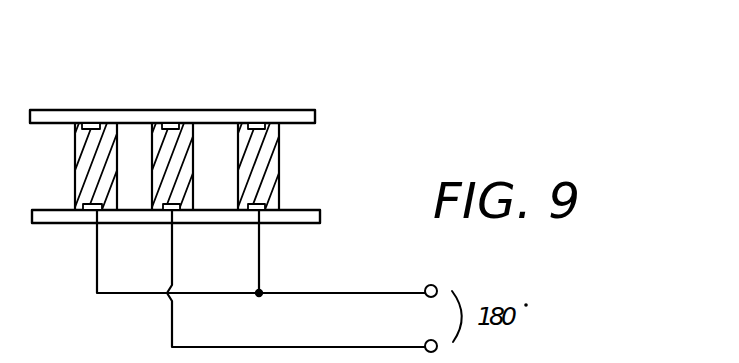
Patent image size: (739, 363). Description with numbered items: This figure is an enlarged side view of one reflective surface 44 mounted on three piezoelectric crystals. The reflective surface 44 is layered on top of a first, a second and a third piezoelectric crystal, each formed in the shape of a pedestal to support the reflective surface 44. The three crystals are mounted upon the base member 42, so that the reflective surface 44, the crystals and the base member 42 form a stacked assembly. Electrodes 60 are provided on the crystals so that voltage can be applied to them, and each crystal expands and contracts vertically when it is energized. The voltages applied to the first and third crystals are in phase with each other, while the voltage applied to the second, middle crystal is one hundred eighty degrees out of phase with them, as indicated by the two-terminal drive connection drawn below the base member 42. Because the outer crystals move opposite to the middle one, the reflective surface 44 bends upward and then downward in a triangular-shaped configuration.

The reflective surface 44 is at (292, 112).
The base member 42 is at (302, 214).
The electrodes 60 is at (77, 124).